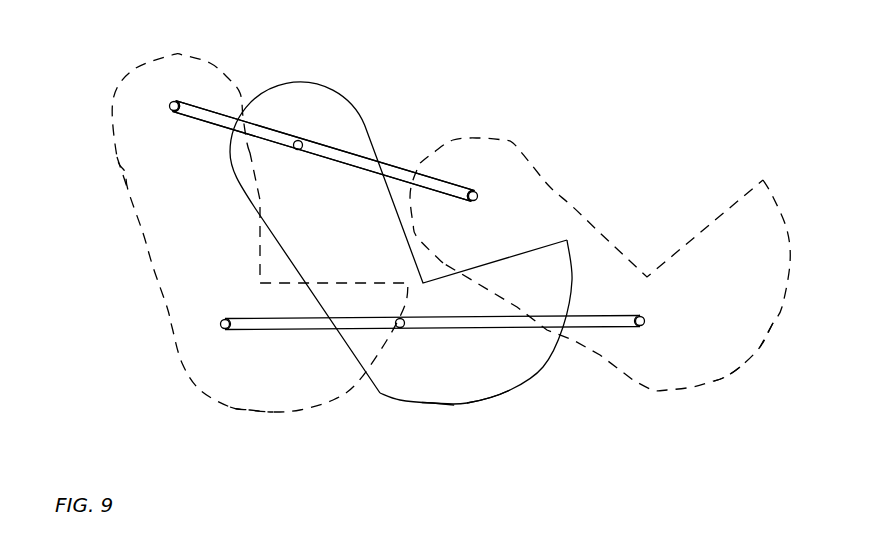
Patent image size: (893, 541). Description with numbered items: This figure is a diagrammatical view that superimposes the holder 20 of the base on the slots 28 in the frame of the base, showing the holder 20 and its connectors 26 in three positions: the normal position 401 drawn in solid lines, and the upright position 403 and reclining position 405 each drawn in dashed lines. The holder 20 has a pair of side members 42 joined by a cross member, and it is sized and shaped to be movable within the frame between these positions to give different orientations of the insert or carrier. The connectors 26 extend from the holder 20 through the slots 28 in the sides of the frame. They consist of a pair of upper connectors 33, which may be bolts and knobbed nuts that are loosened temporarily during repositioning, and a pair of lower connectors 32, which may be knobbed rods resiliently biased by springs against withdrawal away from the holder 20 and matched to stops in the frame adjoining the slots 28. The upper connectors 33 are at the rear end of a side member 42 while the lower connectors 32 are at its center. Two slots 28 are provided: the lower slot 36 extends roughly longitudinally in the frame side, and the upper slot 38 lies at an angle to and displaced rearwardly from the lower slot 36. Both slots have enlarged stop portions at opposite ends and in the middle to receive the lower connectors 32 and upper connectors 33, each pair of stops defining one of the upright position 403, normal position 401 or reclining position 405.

The holder 20 is at (180, 55).
The connectors 26 is at (170, 106).
The slots 28 is at (392, 173).
The lower connectors 32 is at (220, 327).
The upper connectors 33 is at (175, 101).
The lower slot 36 is at (520, 329).
The upper slot 38 is at (211, 110).
The side members 42 is at (133, 170).
The normal position 401 is at (433, 405).
The upright position 403 is at (251, 410).
The reclining position 405 is at (731, 380).